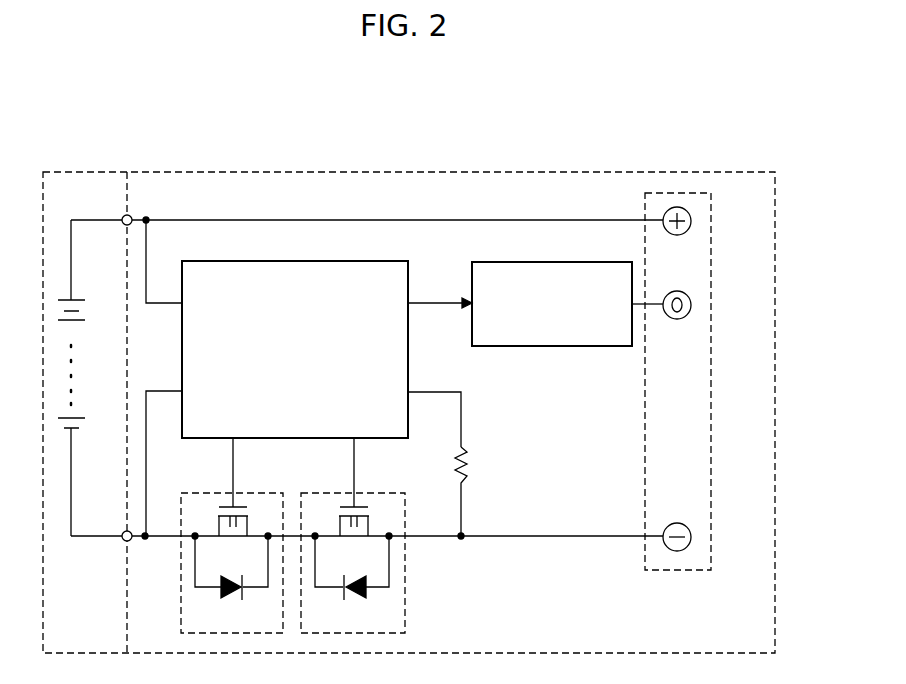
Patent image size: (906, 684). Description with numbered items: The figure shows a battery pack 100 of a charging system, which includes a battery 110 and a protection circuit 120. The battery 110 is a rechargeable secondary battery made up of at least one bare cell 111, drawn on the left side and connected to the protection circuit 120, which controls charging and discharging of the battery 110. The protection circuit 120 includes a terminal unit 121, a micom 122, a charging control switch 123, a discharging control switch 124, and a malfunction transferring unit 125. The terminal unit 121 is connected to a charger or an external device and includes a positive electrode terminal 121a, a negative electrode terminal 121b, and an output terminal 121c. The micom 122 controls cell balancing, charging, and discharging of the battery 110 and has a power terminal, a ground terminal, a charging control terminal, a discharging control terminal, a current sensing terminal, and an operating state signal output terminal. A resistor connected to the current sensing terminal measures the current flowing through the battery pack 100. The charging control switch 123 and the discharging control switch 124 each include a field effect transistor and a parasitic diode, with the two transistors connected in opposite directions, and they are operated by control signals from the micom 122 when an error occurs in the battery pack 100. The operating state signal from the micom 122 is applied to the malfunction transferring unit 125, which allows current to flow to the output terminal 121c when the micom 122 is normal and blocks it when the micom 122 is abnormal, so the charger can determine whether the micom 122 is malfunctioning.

The battery pack 100 is at (592, 128).
The battery 110 is at (86, 172).
The bare cell 111 is at (83, 428).
The protection circuit 120 is at (446, 172).
The terminal unit 121 is at (677, 571).
The positive electrode terminal 121a is at (691, 221).
The negative electrode terminal 121b is at (691, 537).
The output terminal 121c is at (691, 305).
The micom 122 is at (300, 260).
The charging control switch 123 is at (362, 492).
The discharging control switch 124 is at (240, 492).
The malfunction transferring unit 125 is at (555, 262).